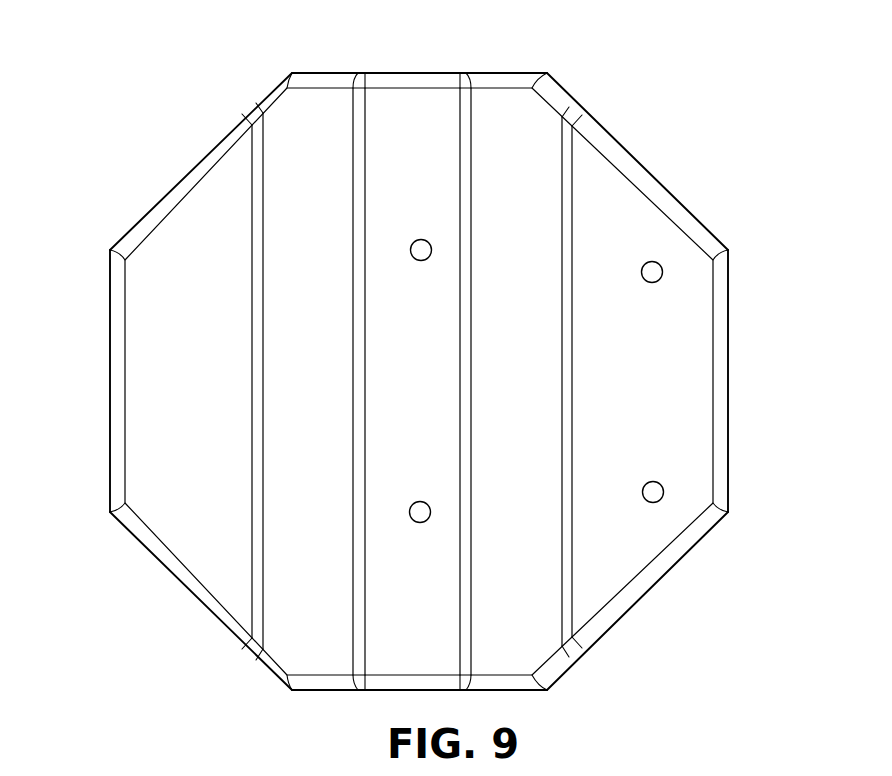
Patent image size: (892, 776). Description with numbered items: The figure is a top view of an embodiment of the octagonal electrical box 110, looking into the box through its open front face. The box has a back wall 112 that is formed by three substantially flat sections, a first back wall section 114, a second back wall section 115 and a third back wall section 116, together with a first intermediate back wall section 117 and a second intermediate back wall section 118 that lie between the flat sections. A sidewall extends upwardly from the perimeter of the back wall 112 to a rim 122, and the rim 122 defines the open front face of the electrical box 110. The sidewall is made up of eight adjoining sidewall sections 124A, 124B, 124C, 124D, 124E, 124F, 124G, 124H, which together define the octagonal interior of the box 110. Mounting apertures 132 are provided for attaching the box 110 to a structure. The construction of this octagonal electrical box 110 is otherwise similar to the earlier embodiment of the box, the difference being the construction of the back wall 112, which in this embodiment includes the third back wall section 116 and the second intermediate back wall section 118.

The octagonal electrical box 110 is at (201, 81).
The back wall 112 is at (425, 95).
The first back wall section 114 is at (222, 409).
The second back wall section 115 is at (442, 399).
The third back wall section 116 is at (675, 399).
The first intermediate back wall section 117 is at (330, 526).
The second intermediate back wall section 118 is at (547, 511).
The rim 122 is at (655, 177).
The sidewall section 124A is at (403, 72).
The sidewall section 124B is at (623, 142).
The sidewall section 124C is at (728, 368).
The sidewall section 124D is at (658, 582).
The sidewall section 124E is at (370, 692).
The sidewall section 124F is at (163, 565).
The sidewall section 124G is at (110, 352).
The sidewall section 124H is at (197, 167).
The mounting apertures 132 is at (422, 240).